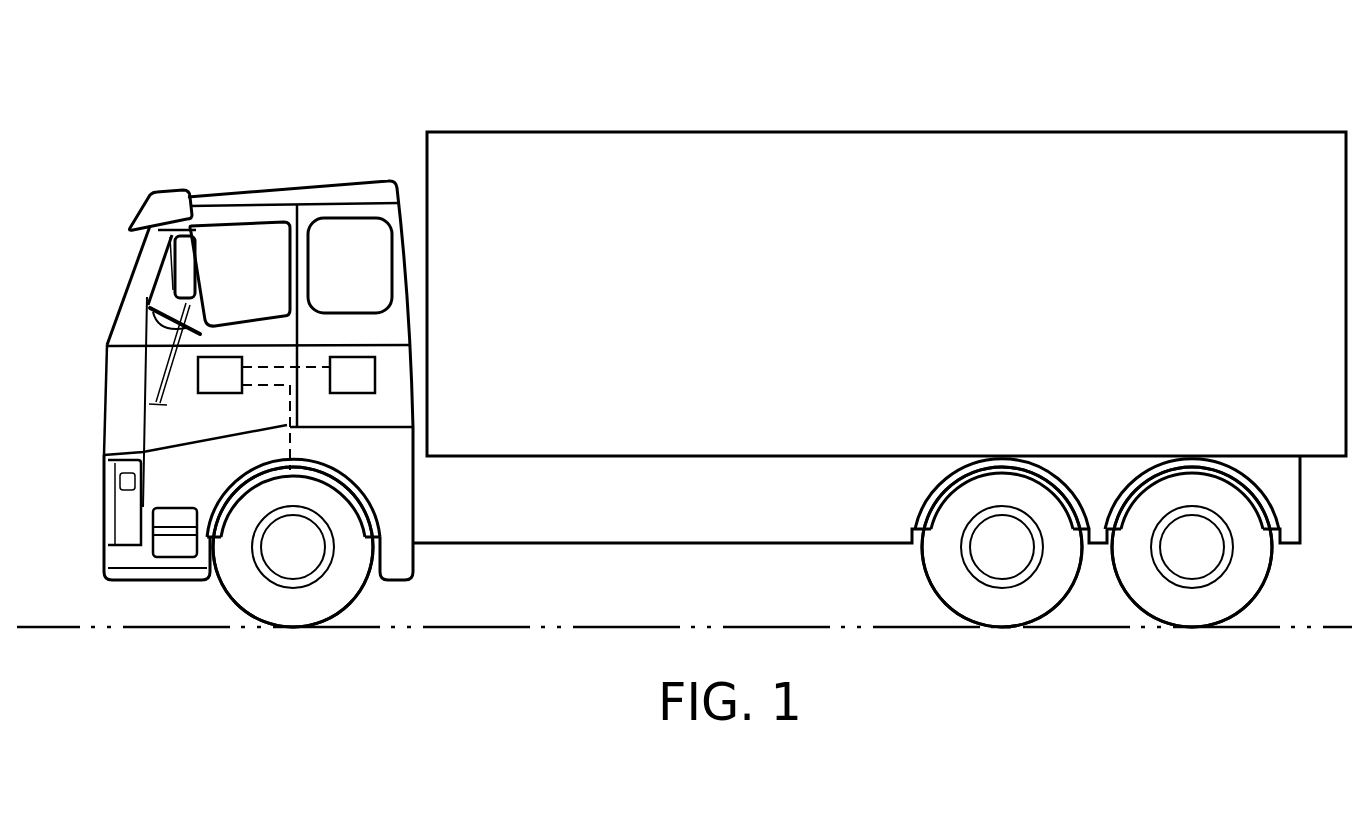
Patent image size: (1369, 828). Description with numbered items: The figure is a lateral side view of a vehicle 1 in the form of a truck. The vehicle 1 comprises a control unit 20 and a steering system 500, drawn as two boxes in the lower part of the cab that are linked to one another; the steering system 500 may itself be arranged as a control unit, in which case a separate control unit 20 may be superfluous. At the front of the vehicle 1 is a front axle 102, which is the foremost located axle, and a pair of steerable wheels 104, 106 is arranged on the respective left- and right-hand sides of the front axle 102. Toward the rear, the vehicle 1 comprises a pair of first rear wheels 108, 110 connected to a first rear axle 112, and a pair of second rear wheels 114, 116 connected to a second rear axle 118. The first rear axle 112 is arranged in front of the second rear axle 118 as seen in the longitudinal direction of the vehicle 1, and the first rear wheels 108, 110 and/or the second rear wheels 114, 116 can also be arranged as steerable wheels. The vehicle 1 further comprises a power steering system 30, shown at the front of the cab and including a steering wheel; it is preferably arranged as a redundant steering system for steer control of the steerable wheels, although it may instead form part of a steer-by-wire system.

The vehicle 1 is at (230, 97).
The control unit 20 is at (197, 385).
The power steering system 30 is at (170, 338).
The steering system 500 is at (376, 366).
The front axle 102 is at (295, 552).
The steerable wheel 104 is at (262, 603).
The steerable wheel 106 is at (293, 547).
The first rear wheel 108 is at (970, 598).
The first rear wheel 110 is at (1002, 547).
The first rear axle 112 is at (1002, 550).
The second rear wheel 114 is at (1160, 598).
The second rear wheel 116 is at (1192, 547).
The second rear axle 118 is at (1190, 550).